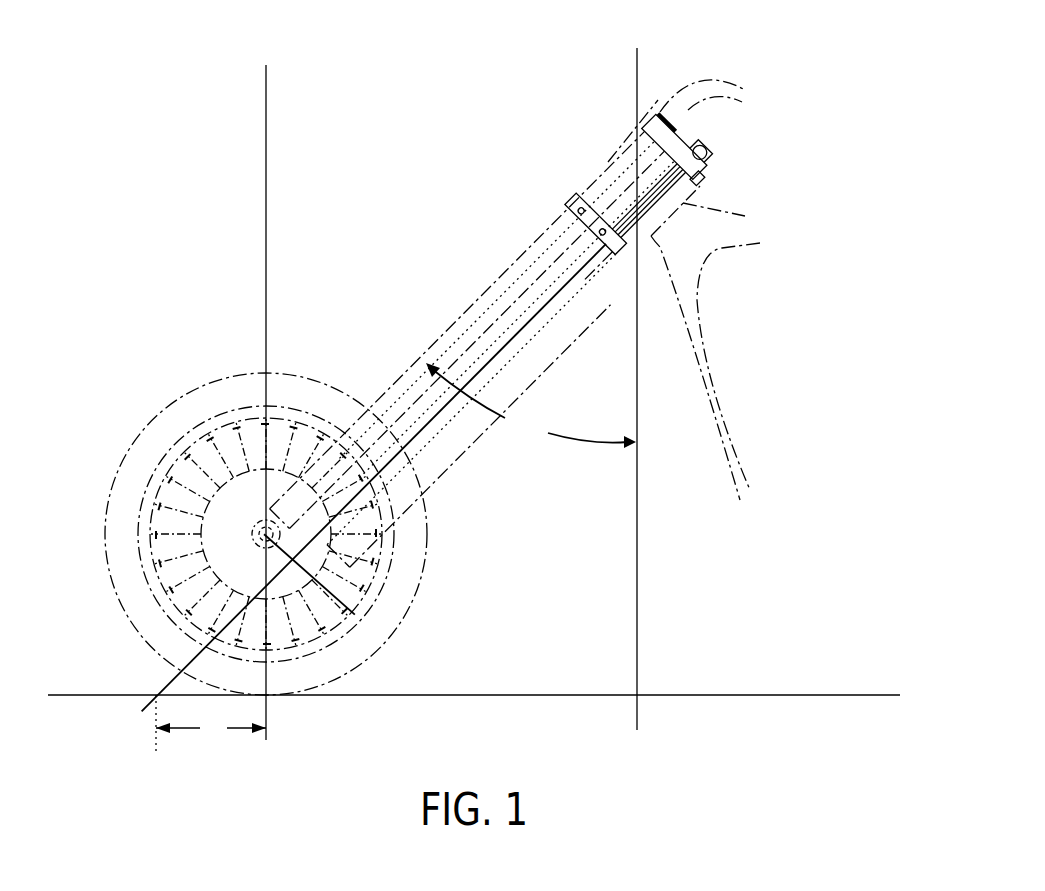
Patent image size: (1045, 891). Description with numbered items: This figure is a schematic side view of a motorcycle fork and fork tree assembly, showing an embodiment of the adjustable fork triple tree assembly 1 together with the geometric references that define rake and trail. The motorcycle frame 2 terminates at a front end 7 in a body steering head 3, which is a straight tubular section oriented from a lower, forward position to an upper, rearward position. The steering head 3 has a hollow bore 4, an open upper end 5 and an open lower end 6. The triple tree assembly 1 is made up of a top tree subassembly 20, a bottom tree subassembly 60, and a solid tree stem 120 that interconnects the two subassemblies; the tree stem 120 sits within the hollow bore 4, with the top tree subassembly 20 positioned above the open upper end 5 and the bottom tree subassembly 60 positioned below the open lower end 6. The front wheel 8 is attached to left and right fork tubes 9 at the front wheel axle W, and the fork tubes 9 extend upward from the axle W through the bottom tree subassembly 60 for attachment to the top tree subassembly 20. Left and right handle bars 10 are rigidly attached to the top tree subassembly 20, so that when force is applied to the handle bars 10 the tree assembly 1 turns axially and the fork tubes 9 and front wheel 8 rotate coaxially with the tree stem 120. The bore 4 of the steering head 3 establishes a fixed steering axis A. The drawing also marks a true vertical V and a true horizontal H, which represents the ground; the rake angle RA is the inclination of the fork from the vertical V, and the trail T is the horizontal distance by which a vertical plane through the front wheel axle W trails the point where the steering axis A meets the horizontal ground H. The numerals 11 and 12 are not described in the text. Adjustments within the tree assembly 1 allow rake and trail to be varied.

The adjustable fork triple tree assembly 1 is at (492, 78).
The frame 2 is at (712, 338).
The body steering head 3 is at (684, 205).
The hollow bore 4 is at (648, 222).
The open upper end 5 is at (697, 180).
The open lower end 6 is at (639, 238).
The front end 7 is at (632, 158).
The front wheel 8 is at (228, 387).
The fork tubes 9 is at (475, 306).
The handle bars 10 is at (710, 76).
The upper triple clamp 11 is at (642, 133).
The handlebar mount 12 is at (662, 113).
The top tree subassembly 20 is at (679, 142).
The bottom tree subassembly 60 is at (597, 247).
The tree stem 120 is at (652, 229).
The front wheel axle W is at (264, 494).
The steering axis A is at (165, 684).
The trail T is at (211, 728).
The true horizontal H is at (421, 695).
The true vertical V is at (640, 578).
The rake angle RA is at (531, 405).